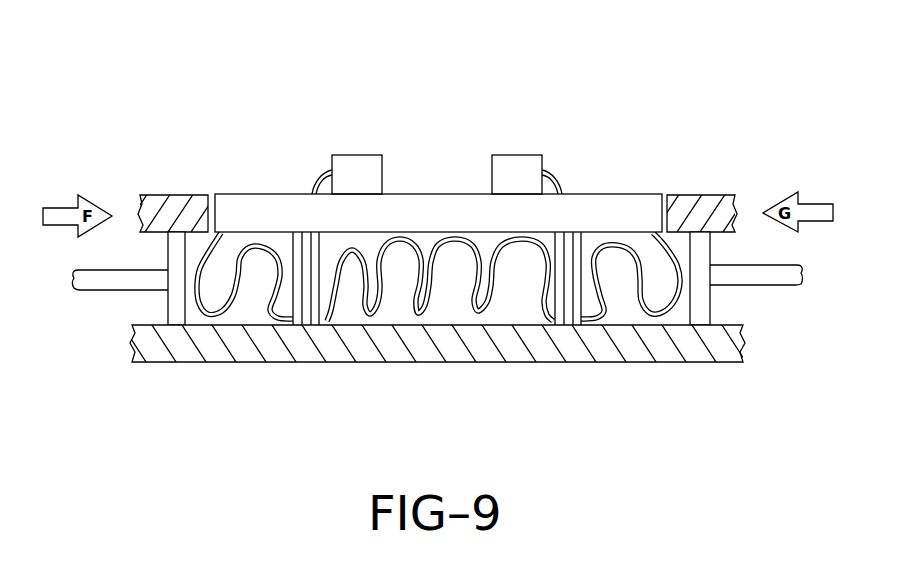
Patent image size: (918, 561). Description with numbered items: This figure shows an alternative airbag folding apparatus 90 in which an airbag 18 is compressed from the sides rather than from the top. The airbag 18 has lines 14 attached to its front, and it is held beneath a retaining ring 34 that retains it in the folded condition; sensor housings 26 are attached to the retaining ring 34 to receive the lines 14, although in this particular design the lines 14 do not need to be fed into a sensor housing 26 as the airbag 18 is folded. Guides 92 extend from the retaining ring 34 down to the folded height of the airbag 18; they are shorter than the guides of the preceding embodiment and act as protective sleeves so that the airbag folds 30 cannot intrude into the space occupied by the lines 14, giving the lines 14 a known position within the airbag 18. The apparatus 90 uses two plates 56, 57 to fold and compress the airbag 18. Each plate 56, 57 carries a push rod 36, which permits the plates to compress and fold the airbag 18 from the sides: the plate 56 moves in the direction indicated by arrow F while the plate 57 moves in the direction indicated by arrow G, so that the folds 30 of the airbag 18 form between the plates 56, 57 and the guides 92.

The airbag folding apparatus 90 is at (382, 100).
The retaining ring 34 is at (238, 193).
The sensor housing 26 is at (345, 155).
The guide 92 is at (297, 257).
The line 14 is at (307, 294).
The airbag fold 30 is at (245, 305).
The airbag 18 is at (443, 310).
The push rod 36 is at (105, 282).
The plate 56 is at (175, 308).
The plate 57 is at (702, 303).